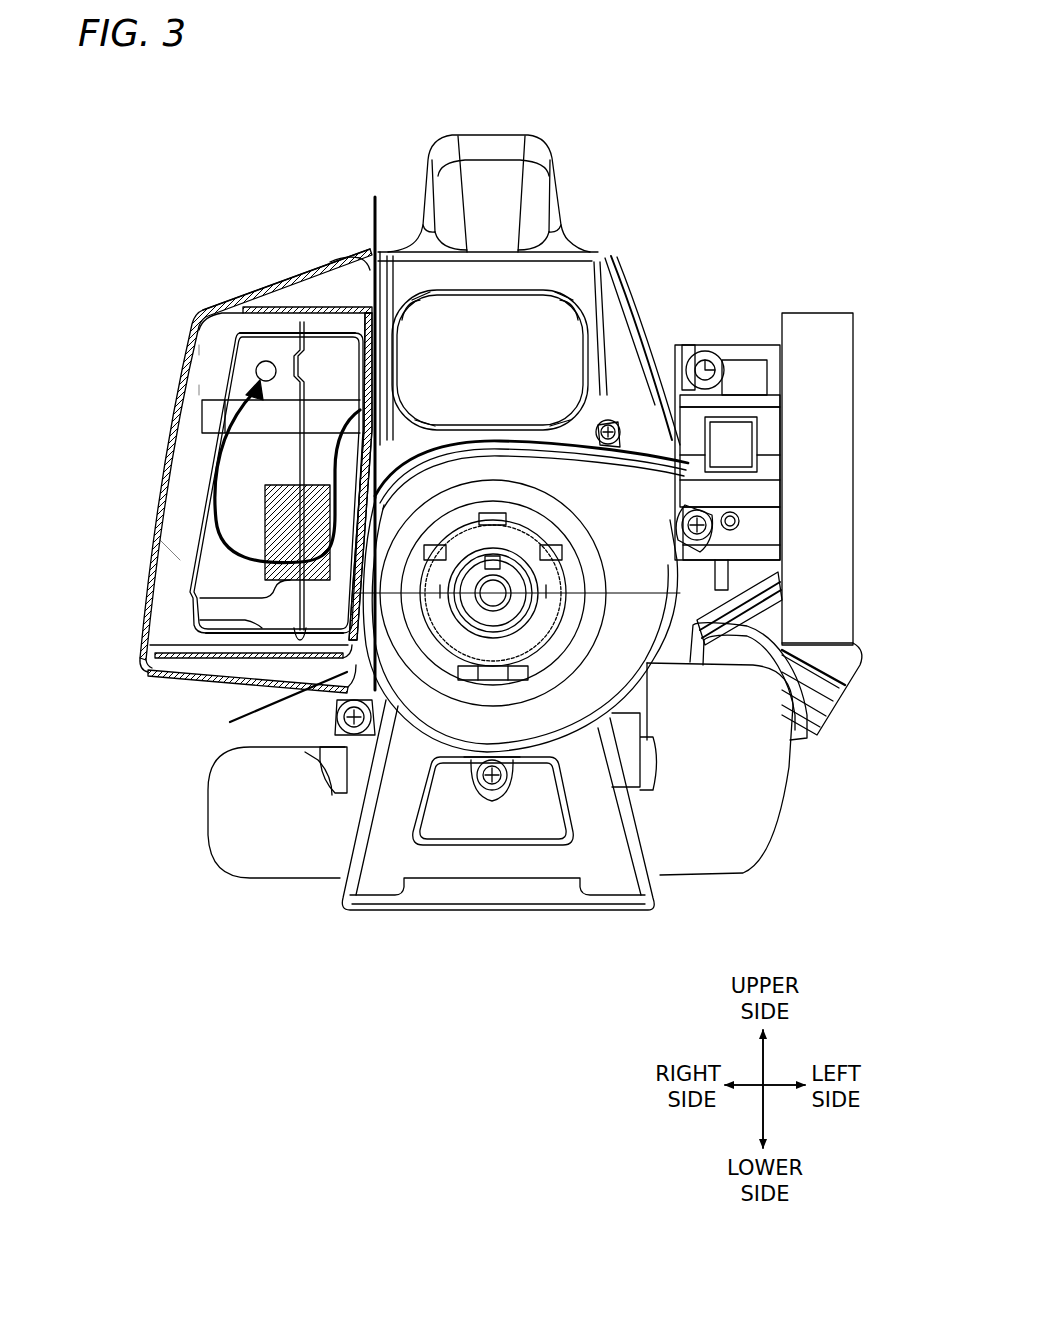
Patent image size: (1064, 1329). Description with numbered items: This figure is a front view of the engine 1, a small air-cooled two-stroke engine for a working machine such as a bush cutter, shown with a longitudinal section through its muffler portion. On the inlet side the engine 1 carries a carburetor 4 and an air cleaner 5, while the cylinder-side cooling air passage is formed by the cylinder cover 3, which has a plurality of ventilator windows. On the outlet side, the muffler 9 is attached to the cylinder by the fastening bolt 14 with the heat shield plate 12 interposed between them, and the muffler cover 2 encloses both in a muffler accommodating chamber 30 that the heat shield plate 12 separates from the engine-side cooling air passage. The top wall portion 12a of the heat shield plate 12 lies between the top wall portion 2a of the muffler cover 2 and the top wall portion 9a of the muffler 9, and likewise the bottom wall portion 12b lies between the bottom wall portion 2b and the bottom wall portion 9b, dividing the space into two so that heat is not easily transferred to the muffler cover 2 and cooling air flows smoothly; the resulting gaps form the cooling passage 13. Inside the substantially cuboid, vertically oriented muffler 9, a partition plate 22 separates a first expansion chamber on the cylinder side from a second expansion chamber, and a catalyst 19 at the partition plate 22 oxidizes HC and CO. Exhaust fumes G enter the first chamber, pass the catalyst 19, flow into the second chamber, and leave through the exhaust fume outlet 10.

The engine 1 is at (718, 152).
The muffler cover 2 is at (148, 572).
The top wall portion of the muffler cover 2a is at (286, 278).
The bottom wall portion of the muffler cover 2b is at (172, 686).
The cylinder cover 3 is at (585, 255).
The carburetor 4 is at (750, 370).
The air cleaner 5 is at (825, 325).
The muffler 9 is at (200, 470).
The top wall portion of the muffler 9a is at (266, 331).
The bottom wall portion of the muffler 9b is at (244, 628).
The exhaust fume outlet 10 is at (257, 364).
The heat shield plate 12 is at (362, 330).
The top wall portion of the heat shield plate 12a is at (262, 318).
The bottom wall portion of the heat shield plate 12b is at (193, 666).
The cooling passage 13 is at (206, 368).
The fastening bolt 14 is at (201, 391).
The catalyst 19 is at (200, 598).
The partition plate 22 is at (268, 444).
The muffler accommodating chamber 30 is at (176, 551).
The exhaust fumes G is at (256, 540).